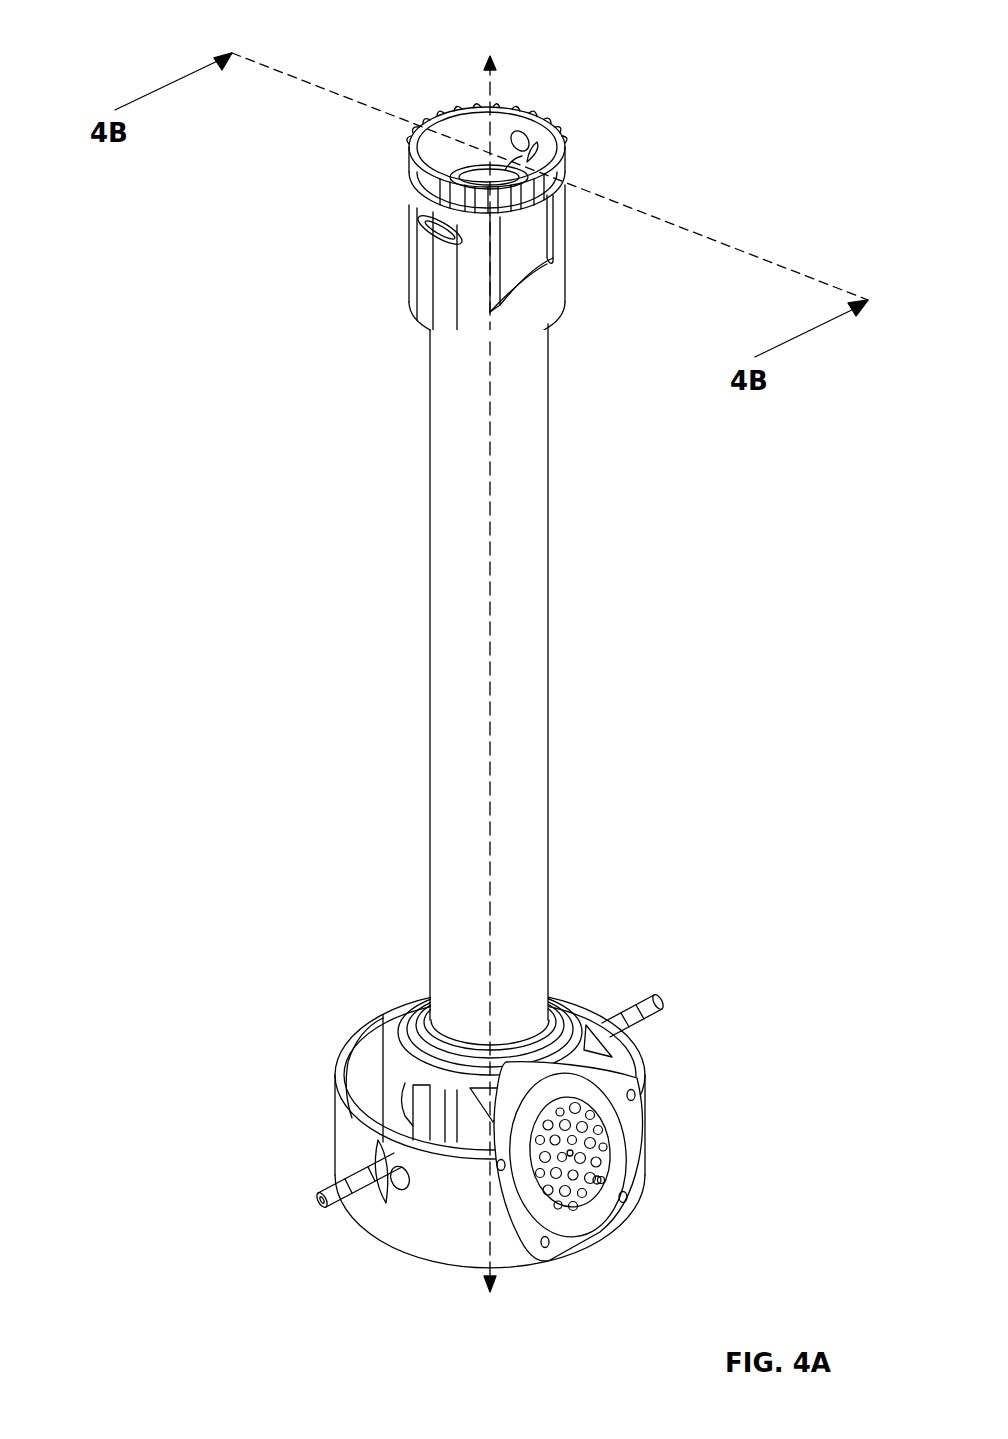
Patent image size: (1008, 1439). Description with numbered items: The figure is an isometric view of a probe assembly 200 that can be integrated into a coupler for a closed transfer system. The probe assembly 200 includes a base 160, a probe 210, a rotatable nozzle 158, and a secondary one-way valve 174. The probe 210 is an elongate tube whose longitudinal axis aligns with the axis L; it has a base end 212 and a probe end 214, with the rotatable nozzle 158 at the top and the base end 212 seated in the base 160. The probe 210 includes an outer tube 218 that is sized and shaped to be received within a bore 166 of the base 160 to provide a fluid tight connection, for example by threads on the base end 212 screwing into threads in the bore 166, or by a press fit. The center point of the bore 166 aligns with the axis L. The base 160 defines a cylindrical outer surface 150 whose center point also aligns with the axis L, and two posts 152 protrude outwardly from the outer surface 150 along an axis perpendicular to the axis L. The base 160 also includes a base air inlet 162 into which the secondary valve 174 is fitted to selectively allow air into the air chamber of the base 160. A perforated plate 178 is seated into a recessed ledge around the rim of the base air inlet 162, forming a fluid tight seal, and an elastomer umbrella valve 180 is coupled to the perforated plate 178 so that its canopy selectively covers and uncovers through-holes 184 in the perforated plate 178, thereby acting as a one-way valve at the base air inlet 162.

The probe assembly 200 is at (155, 47).
The rotatable nozzle 158 is at (487, 223).
The probe end 214 is at (405, 393).
The outer tube 218 is at (548, 420).
The probe 210 is at (443, 503).
The base end 212 is at (372, 984).
The bore 166 is at (568, 1005).
The posts 152 is at (318, 1197).
The base air inlet 162 is at (635, 1090).
The base 160 is at (322, 1144).
The secondary one-way valve 174 is at (610, 1135).
The perforated plate 178 is at (632, 1165).
The through-holes 184 is at (600, 1184).
The umbrella valve 180 is at (593, 1195).
The cylindrical outer surface 150 is at (434, 1252).